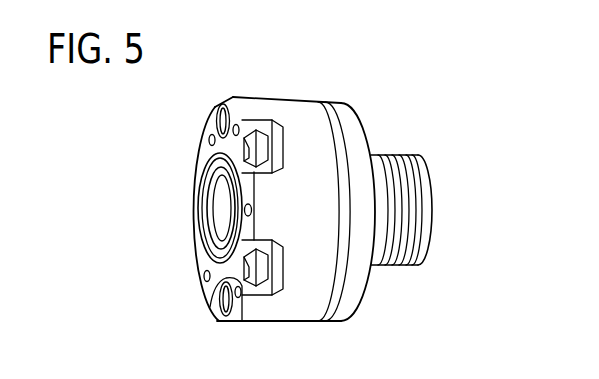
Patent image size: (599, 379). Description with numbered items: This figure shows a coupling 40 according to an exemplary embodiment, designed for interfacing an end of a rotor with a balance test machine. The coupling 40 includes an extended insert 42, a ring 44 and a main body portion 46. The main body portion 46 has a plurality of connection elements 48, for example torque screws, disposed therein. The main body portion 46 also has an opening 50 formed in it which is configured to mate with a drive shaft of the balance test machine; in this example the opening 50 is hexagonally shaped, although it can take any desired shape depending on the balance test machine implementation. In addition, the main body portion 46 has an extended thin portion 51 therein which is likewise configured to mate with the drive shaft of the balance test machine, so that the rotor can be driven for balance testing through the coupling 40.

The coupling 40 is at (160, 134).
The extended insert 42 is at (412, 173).
The ring 44 is at (354, 122).
The main body portion 46 is at (288, 115).
The connection elements 48 is at (200, 171).
The opening 50 is at (230, 206).
The extended thin portion 51 is at (221, 253).